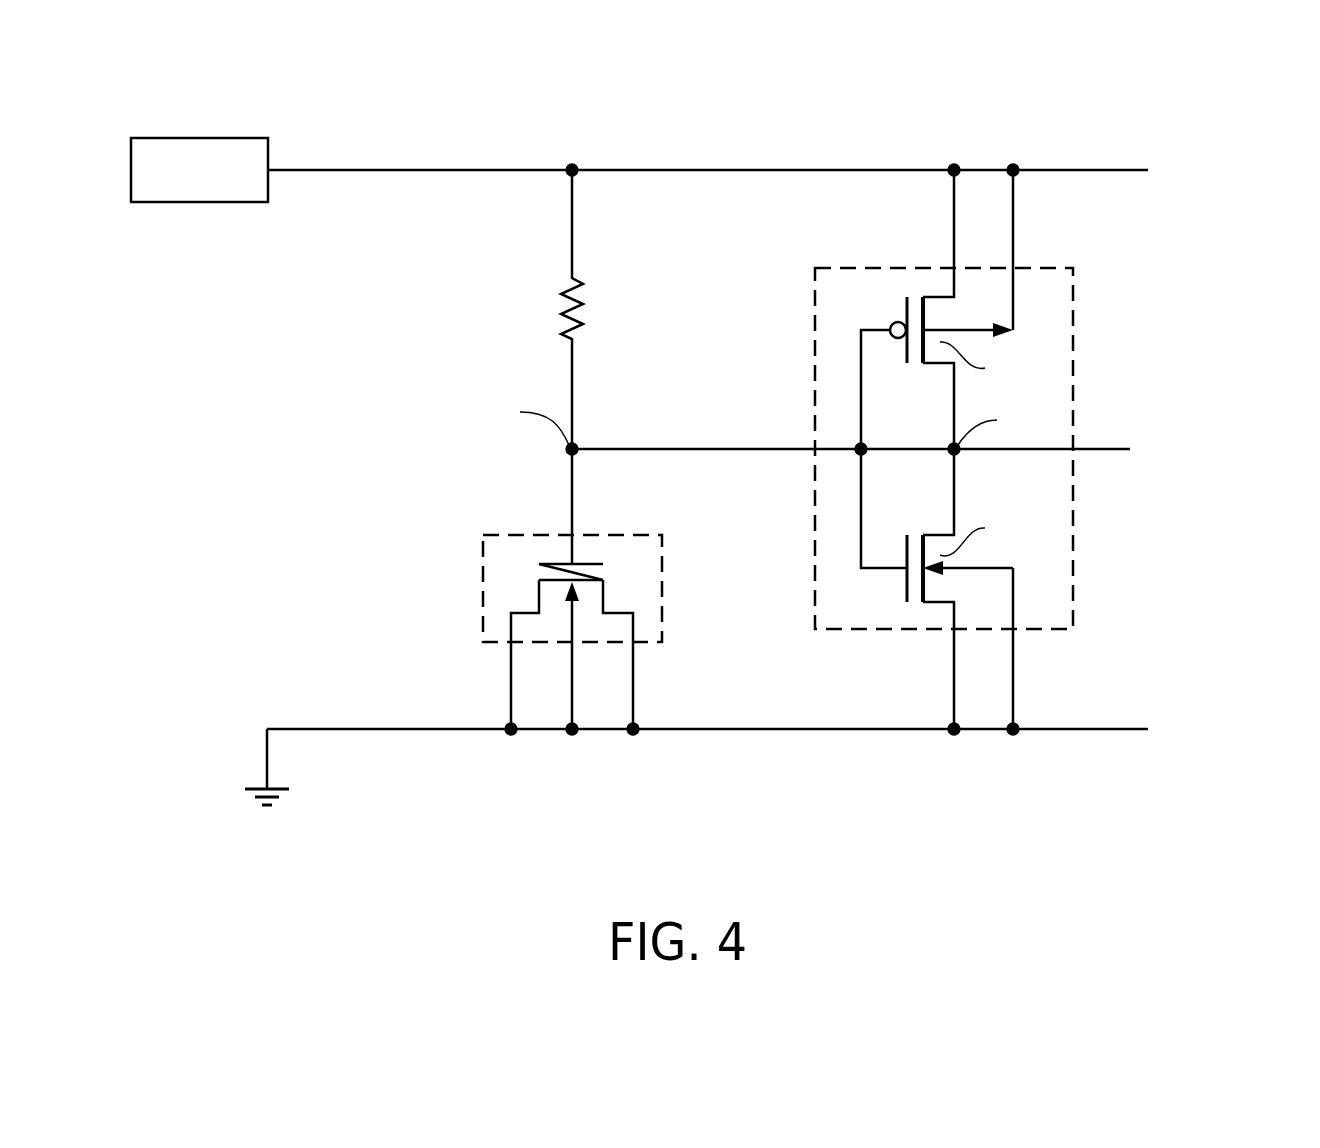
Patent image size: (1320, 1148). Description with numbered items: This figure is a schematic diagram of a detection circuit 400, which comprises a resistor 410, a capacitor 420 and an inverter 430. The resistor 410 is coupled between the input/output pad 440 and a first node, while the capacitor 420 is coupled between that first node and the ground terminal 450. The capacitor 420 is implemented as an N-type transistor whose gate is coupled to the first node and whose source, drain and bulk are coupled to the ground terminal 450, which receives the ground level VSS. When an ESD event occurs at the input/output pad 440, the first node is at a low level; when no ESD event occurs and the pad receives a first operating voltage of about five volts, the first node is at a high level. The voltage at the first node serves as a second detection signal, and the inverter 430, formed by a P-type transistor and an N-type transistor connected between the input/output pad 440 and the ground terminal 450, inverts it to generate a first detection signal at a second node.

The detection circuit 400 is at (1274, 70).
The resistor 410 is at (565, 311).
The capacitor 420 is at (494, 532).
The inverter 430 is at (1078, 566).
The input/output pad 440 is at (177, 185).
The ground terminal 450 is at (253, 805).